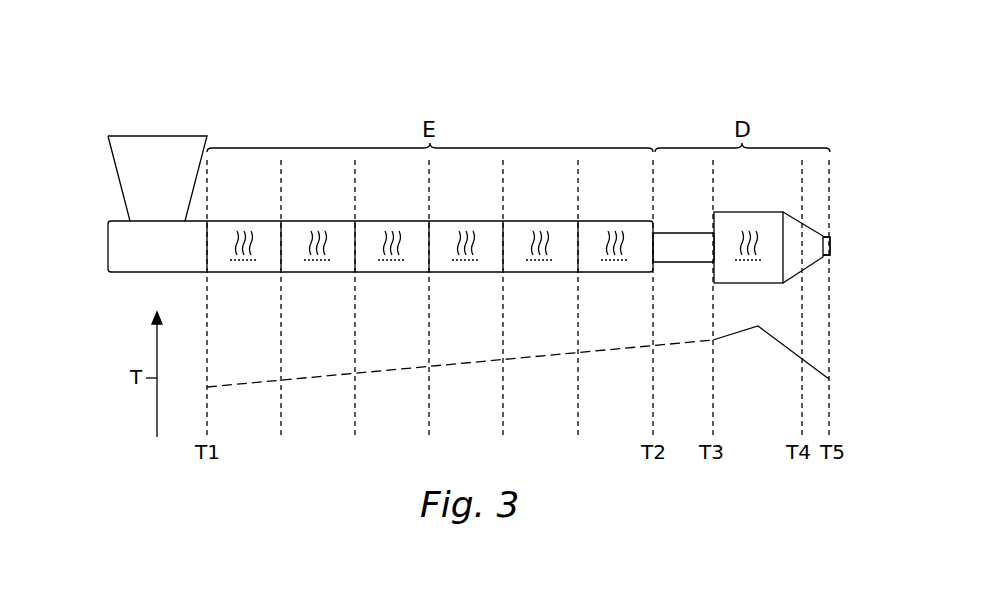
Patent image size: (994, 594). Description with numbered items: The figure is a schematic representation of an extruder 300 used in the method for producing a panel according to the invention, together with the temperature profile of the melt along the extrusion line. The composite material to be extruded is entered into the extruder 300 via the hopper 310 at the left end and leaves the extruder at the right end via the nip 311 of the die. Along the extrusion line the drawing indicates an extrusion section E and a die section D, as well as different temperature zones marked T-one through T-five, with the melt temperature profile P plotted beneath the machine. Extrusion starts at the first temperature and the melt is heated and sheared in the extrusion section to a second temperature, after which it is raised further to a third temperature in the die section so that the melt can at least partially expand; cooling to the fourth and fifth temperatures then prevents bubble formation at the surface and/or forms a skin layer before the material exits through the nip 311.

The extruder 300 is at (112, 88).
The hopper 310 is at (148, 170).
The nip of the die 311 is at (832, 246).